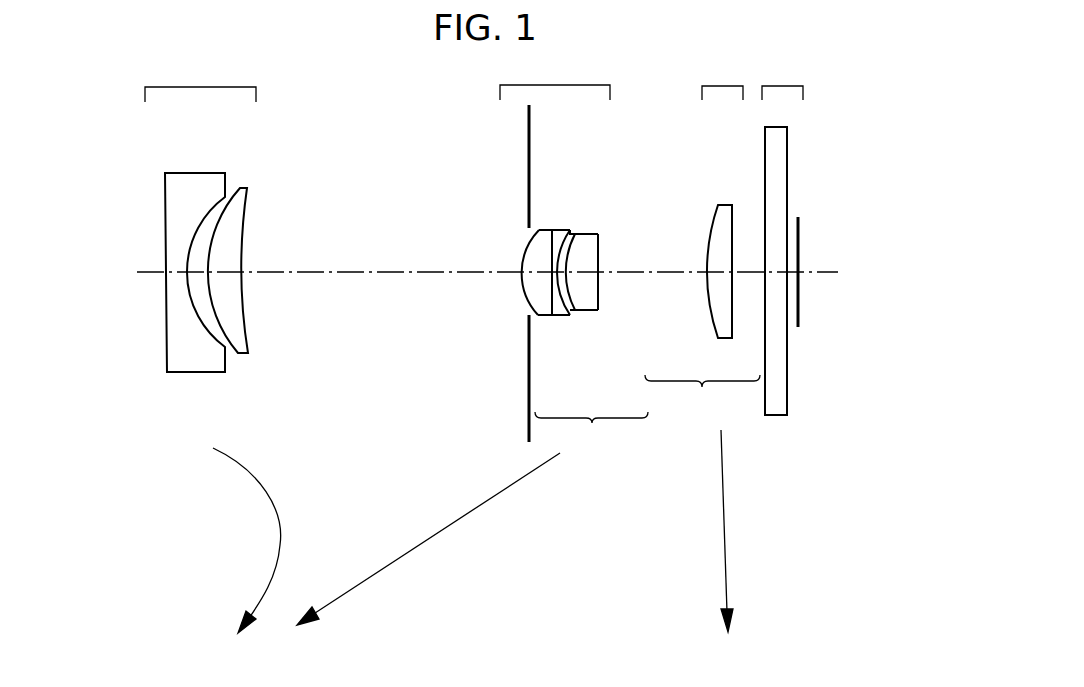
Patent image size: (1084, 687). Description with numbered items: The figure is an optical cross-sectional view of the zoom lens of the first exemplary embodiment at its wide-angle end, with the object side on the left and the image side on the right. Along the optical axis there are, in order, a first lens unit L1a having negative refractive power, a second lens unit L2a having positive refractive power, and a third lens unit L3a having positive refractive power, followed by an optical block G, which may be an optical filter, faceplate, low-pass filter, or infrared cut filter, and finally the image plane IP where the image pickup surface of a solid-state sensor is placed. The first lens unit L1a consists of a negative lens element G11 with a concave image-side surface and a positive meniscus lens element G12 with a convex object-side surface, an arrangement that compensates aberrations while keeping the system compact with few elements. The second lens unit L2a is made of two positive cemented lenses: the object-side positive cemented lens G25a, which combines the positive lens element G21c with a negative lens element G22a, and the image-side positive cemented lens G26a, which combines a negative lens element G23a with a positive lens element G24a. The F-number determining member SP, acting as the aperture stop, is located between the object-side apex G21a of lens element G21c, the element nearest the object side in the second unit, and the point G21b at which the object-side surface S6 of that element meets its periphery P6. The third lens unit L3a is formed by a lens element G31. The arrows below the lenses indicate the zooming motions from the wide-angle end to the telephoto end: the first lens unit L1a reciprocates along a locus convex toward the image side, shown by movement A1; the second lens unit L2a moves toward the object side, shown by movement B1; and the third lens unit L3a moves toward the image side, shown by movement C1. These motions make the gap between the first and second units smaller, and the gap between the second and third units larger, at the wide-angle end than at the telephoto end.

The first lens unit L1a is at (200, 79).
The second lens unit L2a is at (555, 78).
The third lens unit L3a is at (722, 78).
The optical block G is at (782, 236).
The F-number determining member SP is at (528, 150).
The negative lens element G11 is at (170, 203).
The positive lens element G12 is at (243, 202).
The object-side apex G21a is at (495, 269).
The point at which the object-side surface meets the periphery G21b is at (543, 230).
The positive lens element G21c is at (545, 315).
The negative lens element G22a is at (565, 317).
The negative lens element G23a is at (580, 302).
The positive lens element G24a is at (591, 295).
The positive cemented lens G25a is at (591, 432).
The positive cemented lens G26a is at (702, 396).
The object-side surface S6 is at (521, 250).
The periphery P6 is at (565, 230).
The lens element of the third lens unit G31 is at (715, 225).
The image plane IP is at (800, 230).
The movement of the first lens unit A1 is at (264, 540).
The movement of the second lens unit B1 is at (428, 539).
The movement of the third lens unit C1 is at (739, 531).